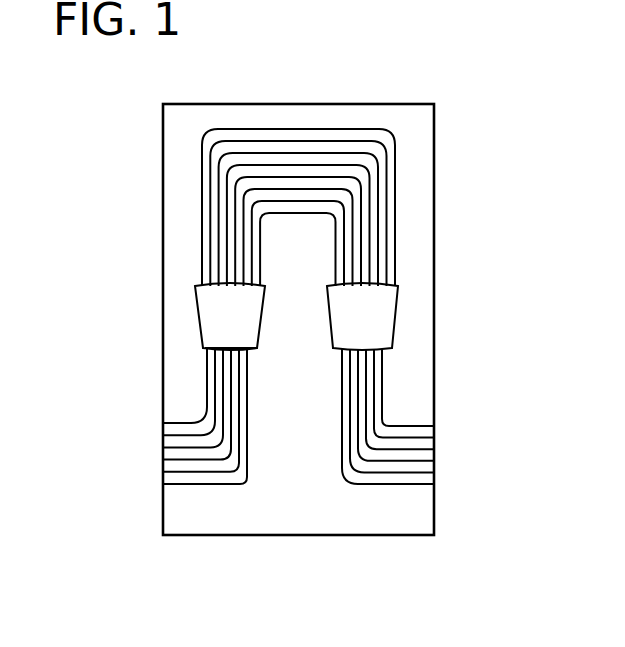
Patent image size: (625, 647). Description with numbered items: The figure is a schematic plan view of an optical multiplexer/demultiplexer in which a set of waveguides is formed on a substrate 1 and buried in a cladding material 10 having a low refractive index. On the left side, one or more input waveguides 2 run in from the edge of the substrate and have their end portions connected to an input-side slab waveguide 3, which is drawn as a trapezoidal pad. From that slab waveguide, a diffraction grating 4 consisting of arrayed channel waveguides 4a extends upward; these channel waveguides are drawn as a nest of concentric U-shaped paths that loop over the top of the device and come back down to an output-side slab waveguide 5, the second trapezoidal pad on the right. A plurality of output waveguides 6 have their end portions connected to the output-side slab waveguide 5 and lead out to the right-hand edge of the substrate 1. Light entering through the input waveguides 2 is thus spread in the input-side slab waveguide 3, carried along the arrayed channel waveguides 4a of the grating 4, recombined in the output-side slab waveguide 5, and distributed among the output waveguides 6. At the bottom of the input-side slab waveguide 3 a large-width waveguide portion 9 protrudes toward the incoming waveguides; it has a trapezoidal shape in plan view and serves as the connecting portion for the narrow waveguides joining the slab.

The substrate 1 is at (205, 536).
The cladding material 10 is at (356, 527).
The input waveguide 2 is at (182, 484).
The input-side slab waveguide 3 is at (213, 298).
The diffraction grating 4 is at (298, 153).
The arrayed channel waveguide 4a is at (325, 129).
The output-side slab waveguide 5 is at (382, 303).
The output waveguide 6 is at (382, 390).
The large-width waveguide portion 9 is at (236, 350).